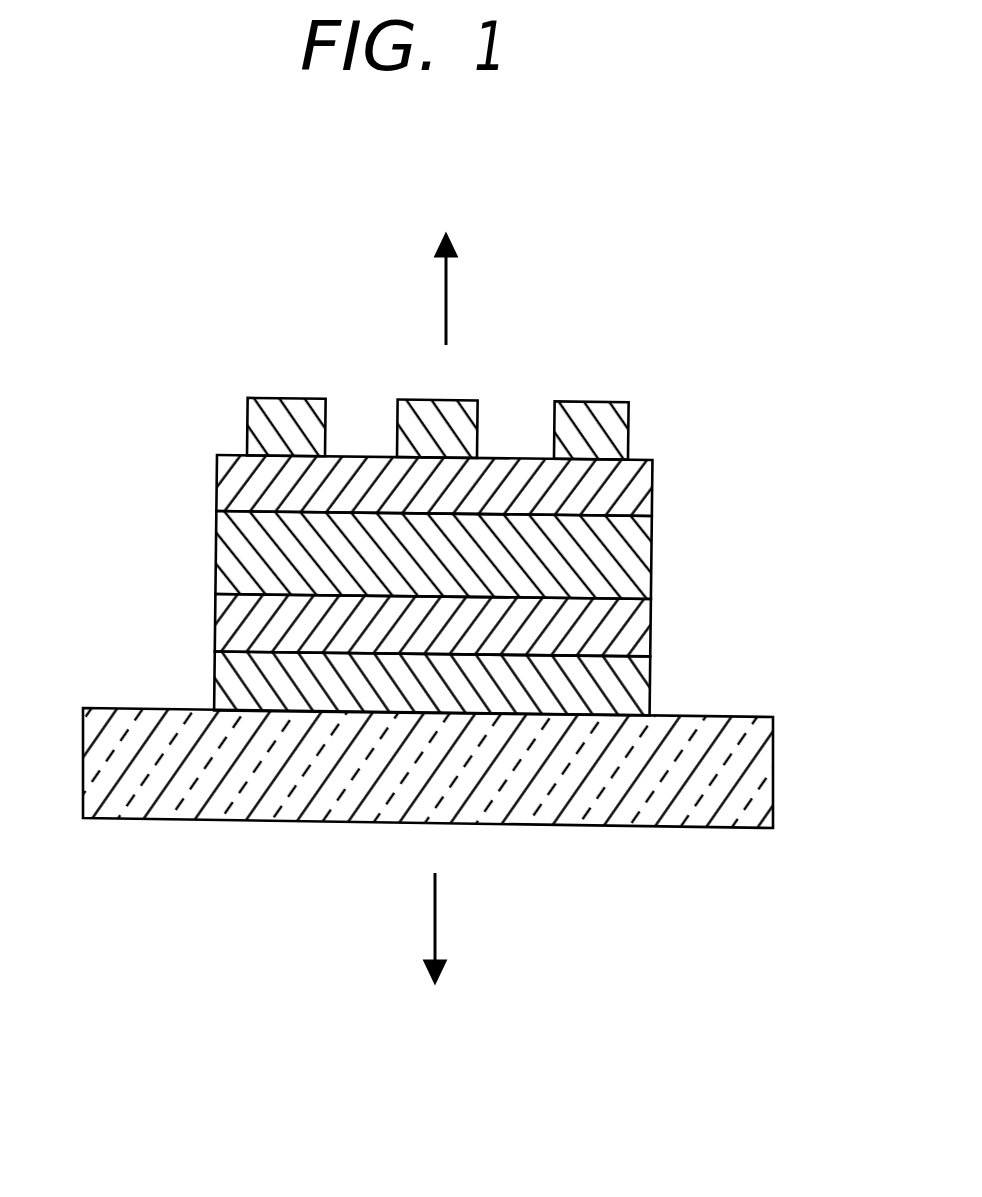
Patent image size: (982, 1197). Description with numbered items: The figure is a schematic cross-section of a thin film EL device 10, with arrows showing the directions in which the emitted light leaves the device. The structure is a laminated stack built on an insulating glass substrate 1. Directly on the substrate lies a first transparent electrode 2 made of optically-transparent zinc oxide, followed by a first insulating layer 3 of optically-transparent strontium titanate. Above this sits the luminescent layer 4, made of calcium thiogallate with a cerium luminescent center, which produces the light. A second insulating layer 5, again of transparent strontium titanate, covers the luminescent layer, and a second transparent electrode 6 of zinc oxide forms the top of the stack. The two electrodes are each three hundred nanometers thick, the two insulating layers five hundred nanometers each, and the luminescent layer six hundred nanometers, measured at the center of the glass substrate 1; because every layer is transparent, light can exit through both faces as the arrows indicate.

The thin film EL device 10 is at (190, 345).
The insulating glass substrate 1 is at (773, 748).
The first transparent electrode 2 is at (650, 690).
The first insulating layer 3 is at (640, 626).
The luminescent layer 4 is at (643, 543).
The second insulating layer 5 is at (643, 487).
The second transparent electrode 6 is at (627, 430).